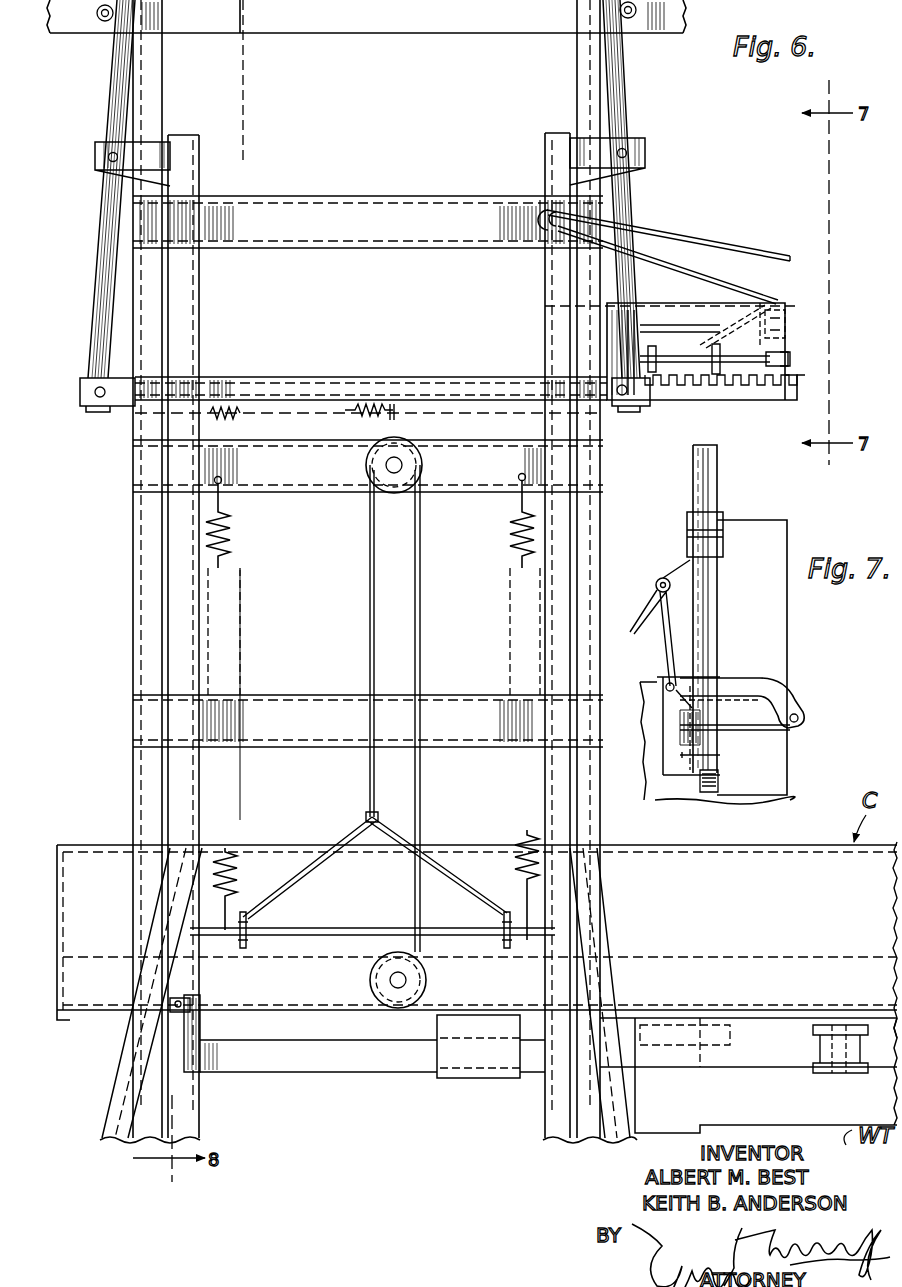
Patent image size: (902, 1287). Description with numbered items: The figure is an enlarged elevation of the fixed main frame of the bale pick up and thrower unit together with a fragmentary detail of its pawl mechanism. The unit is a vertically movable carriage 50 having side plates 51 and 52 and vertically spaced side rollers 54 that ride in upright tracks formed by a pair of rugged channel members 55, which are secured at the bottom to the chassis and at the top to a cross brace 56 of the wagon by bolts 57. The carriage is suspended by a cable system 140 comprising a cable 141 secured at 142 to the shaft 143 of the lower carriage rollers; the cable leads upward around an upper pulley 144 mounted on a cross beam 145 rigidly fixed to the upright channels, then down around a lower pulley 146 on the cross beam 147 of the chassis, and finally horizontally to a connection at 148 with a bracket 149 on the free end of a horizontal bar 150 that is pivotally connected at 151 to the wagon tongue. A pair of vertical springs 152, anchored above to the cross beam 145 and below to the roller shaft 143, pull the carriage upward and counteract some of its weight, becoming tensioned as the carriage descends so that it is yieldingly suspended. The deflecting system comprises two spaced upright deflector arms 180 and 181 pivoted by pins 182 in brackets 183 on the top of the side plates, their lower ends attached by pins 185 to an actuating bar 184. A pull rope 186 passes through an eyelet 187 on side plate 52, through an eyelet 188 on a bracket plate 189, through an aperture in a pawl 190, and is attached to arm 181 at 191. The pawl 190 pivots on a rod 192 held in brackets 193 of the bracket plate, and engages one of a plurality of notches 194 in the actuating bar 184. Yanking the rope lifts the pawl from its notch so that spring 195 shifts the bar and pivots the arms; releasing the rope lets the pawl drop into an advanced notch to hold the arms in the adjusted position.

In FIG. 6, the carriage 50 is at (168, 603).
In FIG. 6, the side plate 51 is at (200, 640).
In FIG. 6, the side plate 52 is at (545, 648).
In FIG. 7, the side plate 52 is at (788, 536).
In FIG. 6, the side rollers 54 is at (112, 352).
In FIG. 6, the upright channel members 55 is at (163, 90).
In FIG. 6, the cross brace 56 is at (357, 33).
In FIG. 6, the bolts 57 is at (104, 22).
In FIG. 6, the cable system 140 is at (366, 640).
In FIG. 6, the cable 141 is at (370, 771).
In FIG. 6, the cable securing points 142 is at (245, 948).
In FIG. 6, the shaft 143 is at (364, 925).
In FIG. 6, the upper pulley 144 is at (392, 478).
In FIG. 6, the cross beam 145 is at (289, 492).
In FIG. 6, the lower pulley 146 is at (398, 985).
In FIG. 6, the cross beam 147 is at (286, 840).
In FIG. 6, the cable connection 148 is at (172, 1006).
In FIG. 6, the bracket 149 is at (186, 1030).
In FIG. 6, the bar 150 is at (293, 1075).
In FIG. 6, the pivot connection 151 is at (825, 1048).
In FIG. 6, the springs 152 is at (240, 545).
In FIG. 6, the deflector arm 180 is at (110, 108).
In FIG. 6, the deflector arm 181 is at (630, 108).
In FIG. 7, the deflector arm 181 is at (718, 471).
In FIG. 6, the pins 182 is at (110, 164).
In FIG. 7, the pins 182 is at (722, 521).
In FIG. 6, the brackets 183 is at (95, 151).
In FIG. 7, the brackets 183 is at (688, 528).
In FIG. 6, the actuating bar 184 is at (330, 377).
In FIG. 7, the actuating bar 184 is at (720, 778).
In FIG. 6, the pins 185 is at (100, 400).
In FIG. 7, the pins 185 is at (721, 756).
In FIG. 6, the pull rope 186 is at (770, 256).
In FIG. 6, the eyelet 187 is at (546, 202).
In FIG. 7, the eyelet 187 is at (672, 577).
In FIG. 6, the eyelet 188 is at (786, 326).
In FIG. 7, the eyelet 188 is at (680, 685).
In FIG. 6, the bracket plate 189 is at (790, 304).
In FIG. 7, the bracket plate 189 is at (658, 795).
In FIG. 6, the pawl 190 is at (720, 345).
In FIG. 7, the pawl 190 is at (765, 729).
In FIG. 6, the rope attachment point 191 is at (630, 308).
In FIG. 7, the rope attachment point 191 is at (743, 699).
In FIG. 6, the rod 192 is at (790, 360).
In FIG. 6, the brackets 193 is at (788, 351).
In FIG. 7, the brackets 193 is at (770, 690).
In FIG. 6, the notches 194 is at (725, 385).
In FIG. 6, the spring 195 is at (316, 412).